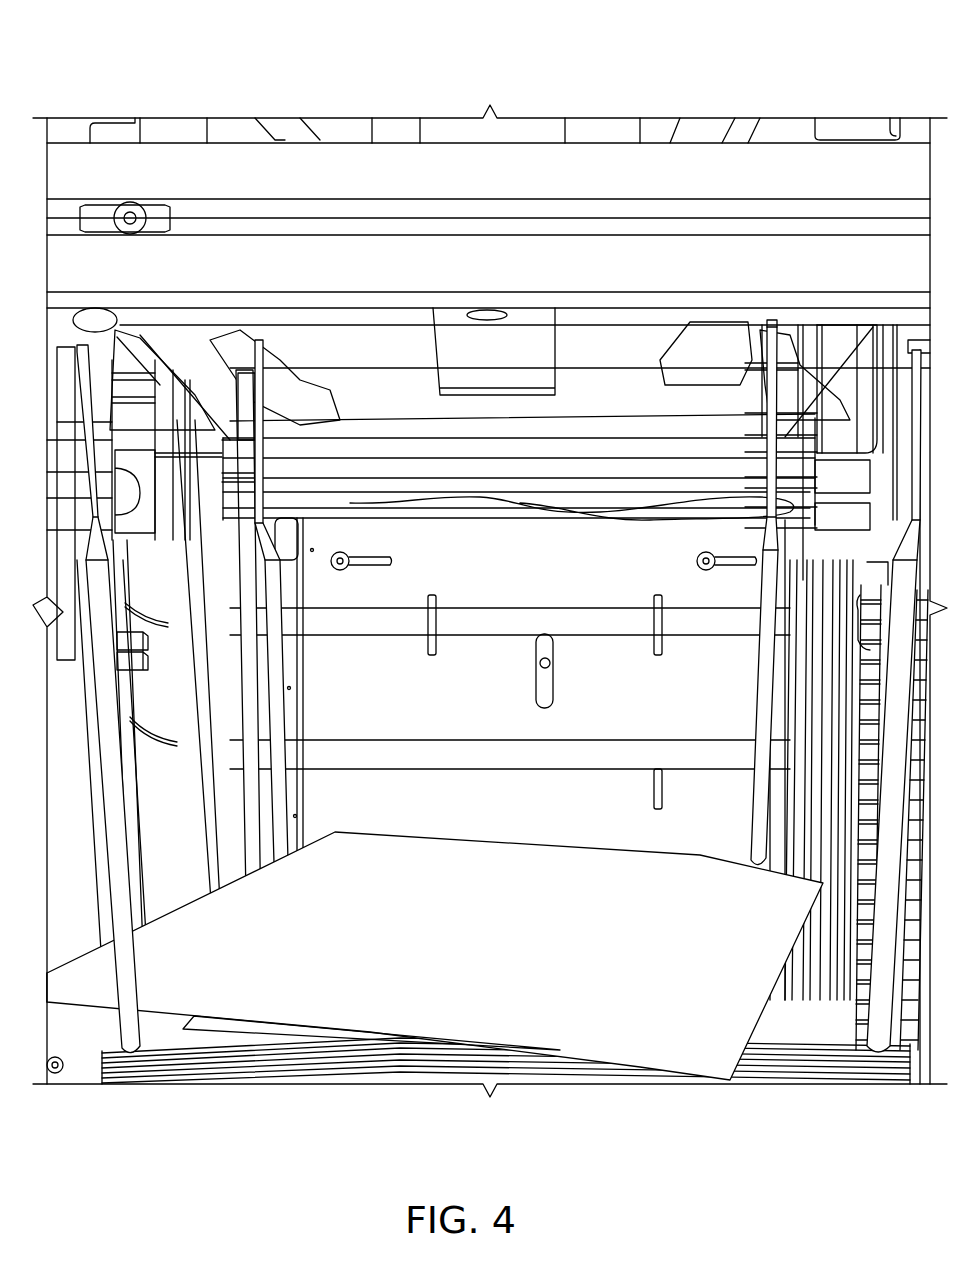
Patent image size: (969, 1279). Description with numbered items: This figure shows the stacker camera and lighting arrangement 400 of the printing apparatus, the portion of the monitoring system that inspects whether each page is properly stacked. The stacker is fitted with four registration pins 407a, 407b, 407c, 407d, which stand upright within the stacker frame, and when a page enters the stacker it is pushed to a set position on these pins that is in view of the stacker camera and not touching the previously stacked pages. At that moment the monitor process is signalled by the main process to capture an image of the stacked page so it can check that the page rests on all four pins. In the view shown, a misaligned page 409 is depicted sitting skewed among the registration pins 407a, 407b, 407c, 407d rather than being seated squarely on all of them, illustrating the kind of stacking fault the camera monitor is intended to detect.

The stacker camera and lighting view 400 is at (784, 52).
The registration pin 407a is at (281, 663).
The registration pin 407b is at (130, 977).
The registration pin 407c is at (758, 712).
The registration pin 407d is at (878, 978).
The misaligned page 409 is at (540, 1004).